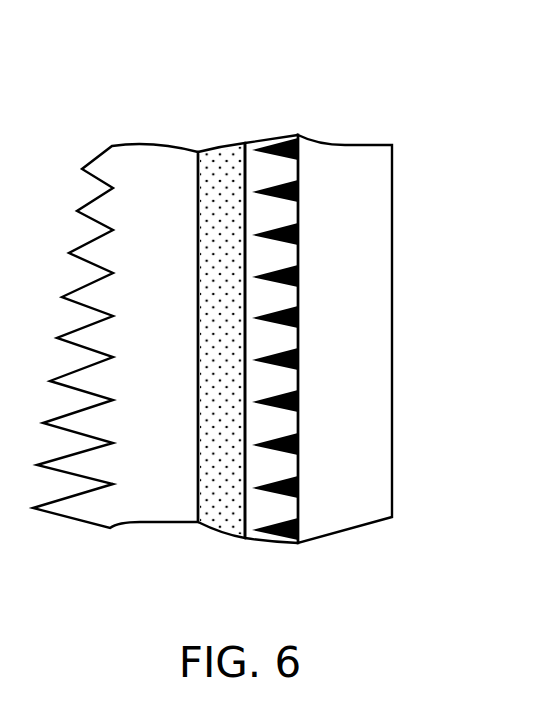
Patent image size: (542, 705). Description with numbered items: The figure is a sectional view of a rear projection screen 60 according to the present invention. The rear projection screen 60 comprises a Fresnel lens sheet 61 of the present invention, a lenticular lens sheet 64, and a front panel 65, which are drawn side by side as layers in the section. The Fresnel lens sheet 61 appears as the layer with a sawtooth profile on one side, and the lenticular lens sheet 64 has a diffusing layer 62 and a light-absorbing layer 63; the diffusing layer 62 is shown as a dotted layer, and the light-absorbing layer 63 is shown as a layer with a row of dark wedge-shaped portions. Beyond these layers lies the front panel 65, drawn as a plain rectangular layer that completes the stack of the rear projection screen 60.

The rear projection screen 60 is at (253, 306).
The Fresnel lens sheet 61 is at (147, 510).
The diffusing layer 62 is at (215, 528).
The light-absorbing layer 63 is at (280, 538).
The lenticular lens sheet 64 is at (243, 121).
The front panel 65 is at (368, 464).